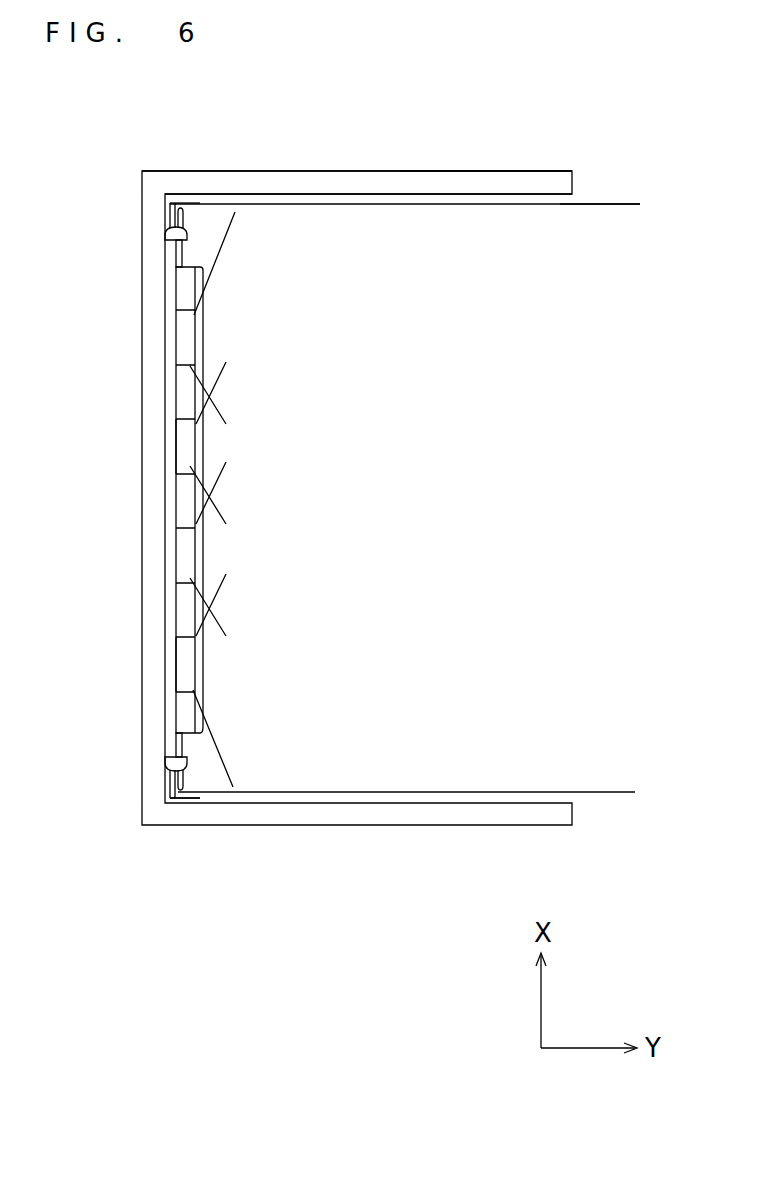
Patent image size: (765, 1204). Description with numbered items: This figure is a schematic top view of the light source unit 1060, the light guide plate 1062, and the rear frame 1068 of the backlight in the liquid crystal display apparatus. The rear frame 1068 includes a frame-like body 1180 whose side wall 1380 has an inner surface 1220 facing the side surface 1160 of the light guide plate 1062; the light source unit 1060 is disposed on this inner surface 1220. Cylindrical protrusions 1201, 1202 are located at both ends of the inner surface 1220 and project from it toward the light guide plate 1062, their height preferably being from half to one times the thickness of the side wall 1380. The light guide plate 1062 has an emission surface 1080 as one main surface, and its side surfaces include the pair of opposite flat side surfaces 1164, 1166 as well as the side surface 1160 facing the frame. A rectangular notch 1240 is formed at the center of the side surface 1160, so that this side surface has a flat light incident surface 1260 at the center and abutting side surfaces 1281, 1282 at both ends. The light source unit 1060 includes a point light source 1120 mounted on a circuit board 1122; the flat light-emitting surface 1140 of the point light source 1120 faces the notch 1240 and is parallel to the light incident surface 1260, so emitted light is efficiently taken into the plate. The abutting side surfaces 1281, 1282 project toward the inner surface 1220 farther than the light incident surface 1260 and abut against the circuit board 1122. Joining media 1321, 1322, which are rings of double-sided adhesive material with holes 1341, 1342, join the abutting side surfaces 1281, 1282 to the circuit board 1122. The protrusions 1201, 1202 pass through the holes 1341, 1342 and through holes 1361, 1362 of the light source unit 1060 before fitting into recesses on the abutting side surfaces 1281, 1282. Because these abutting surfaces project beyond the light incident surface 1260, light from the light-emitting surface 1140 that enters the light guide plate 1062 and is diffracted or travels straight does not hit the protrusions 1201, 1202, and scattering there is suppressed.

The side wall 1380 is at (142, 318).
The frame-like body 1180 is at (348, 172).
The rear frame 1068 is at (428, 172).
The side surface 1164 is at (586, 204).
The light guide plate 1062 is at (612, 204).
The side surface 1166 is at (607, 795).
The side surface 1160 is at (176, 350).
The abutting side surface 1281 is at (172, 257).
The abutting side surface 1282 is at (176, 745).
The hole 1361 is at (164, 232).
The hole 1362 is at (165, 768).
The joining medium 1321 is at (181, 208).
The joining medium 1322 is at (181, 772).
The hole 1341 is at (186, 205).
The hole 1342 is at (188, 772).
The light incident surface 1260 is at (190, 466).
The notch 1240 is at (183, 565).
The protrusion 1201 is at (188, 239).
The protrusion 1202 is at (190, 756).
The point light source 1120 is at (183, 413).
The circuit board 1122 is at (183, 500).
The light source unit 1060 is at (177, 660).
The light-emitting surface 1140 is at (200, 441).
The inner surface 1220 is at (163, 677).
The emission surface 1080 is at (498, 508).